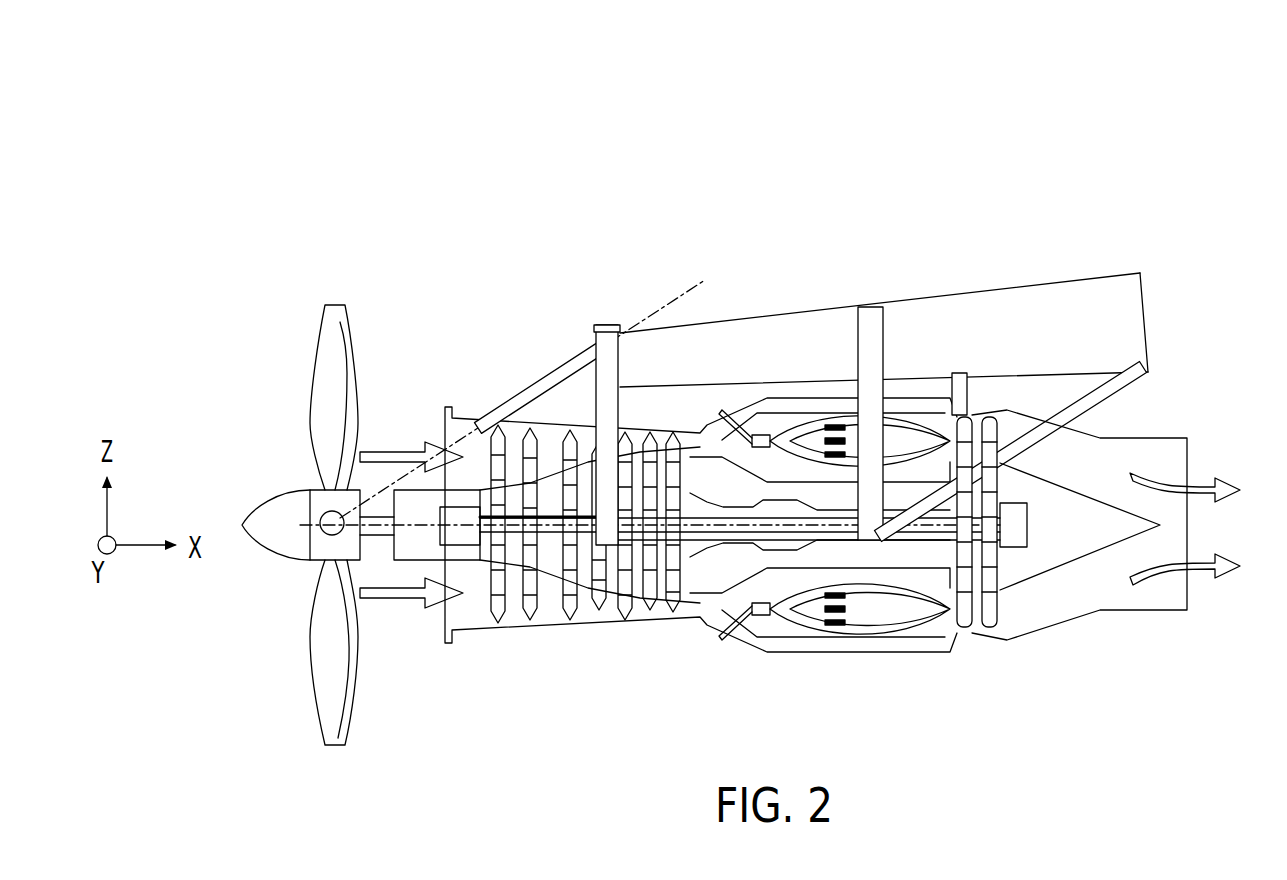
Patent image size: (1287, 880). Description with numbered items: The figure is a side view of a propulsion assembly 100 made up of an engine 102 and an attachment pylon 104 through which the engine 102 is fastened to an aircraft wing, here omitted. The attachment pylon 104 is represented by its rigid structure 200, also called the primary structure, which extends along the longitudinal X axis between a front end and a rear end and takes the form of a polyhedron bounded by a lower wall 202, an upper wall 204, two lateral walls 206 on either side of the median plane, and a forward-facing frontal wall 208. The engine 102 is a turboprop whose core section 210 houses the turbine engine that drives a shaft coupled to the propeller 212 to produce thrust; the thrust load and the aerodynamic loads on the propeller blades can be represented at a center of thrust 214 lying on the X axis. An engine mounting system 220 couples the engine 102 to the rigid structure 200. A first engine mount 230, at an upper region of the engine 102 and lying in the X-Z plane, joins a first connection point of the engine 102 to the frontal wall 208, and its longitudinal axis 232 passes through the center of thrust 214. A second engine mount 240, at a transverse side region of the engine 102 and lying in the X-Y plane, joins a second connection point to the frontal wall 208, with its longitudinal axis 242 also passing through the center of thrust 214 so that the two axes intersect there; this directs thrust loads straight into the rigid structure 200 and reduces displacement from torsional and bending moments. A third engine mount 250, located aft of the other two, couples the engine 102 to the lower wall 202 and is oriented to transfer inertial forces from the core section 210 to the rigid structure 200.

The propulsion assembly 100 is at (366, 183).
The engine 102 is at (294, 307).
The attachment pylon 104 is at (817, 216).
The rigid structure 200 is at (1140, 270).
The lower wall 202 is at (1083, 374).
The upper wall 204 is at (957, 297).
The lateral walls 206 is at (1123, 320).
The frontal wall 208 is at (595, 332).
The core section 210 is at (805, 650).
The propeller 212 is at (318, 398).
The center of thrust 214 is at (318, 516).
The engine mounting system 220 is at (504, 304).
The first engine mount 230 is at (548, 370).
The longitudinal axis 232 is at (675, 305).
The second engine mount 240 is at (523, 530).
The longitudinal axis 242 is at (603, 533).
The third engine mount 250 is at (968, 387).